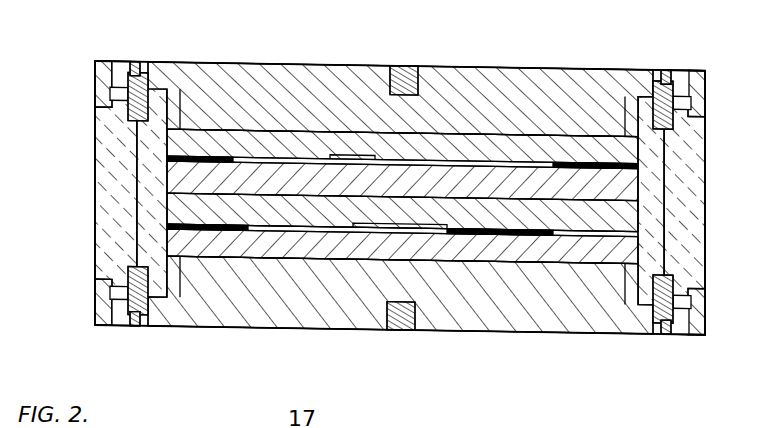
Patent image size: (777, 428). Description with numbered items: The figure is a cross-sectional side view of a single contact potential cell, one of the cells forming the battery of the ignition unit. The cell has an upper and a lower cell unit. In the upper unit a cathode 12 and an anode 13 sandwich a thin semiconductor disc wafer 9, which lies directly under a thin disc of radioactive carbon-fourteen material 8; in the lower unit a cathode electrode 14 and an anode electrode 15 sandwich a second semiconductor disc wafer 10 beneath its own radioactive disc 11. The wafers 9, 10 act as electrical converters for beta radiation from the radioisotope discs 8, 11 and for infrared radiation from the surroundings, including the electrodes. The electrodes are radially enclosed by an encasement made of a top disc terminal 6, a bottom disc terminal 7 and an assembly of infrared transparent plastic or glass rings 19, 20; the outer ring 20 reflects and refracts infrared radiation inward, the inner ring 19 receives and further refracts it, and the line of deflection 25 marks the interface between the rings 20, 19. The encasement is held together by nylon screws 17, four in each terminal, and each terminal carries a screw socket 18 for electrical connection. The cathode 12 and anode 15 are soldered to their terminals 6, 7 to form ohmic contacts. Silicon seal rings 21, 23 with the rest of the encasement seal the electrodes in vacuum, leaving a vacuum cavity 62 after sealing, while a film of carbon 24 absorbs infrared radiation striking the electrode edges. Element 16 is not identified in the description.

The top disc terminal 6 is at (481, 80).
The bottom disc terminal 7 is at (490, 330).
The disc of radioactive material 8 is at (372, 166).
The semiconductor disc wafer 9 is at (490, 166).
The semiconductor disc wafer 10 is at (302, 238).
The disc of radioactive material 11 is at (360, 237).
The cathode 12 is at (522, 150).
The anode 13 is at (560, 192).
The cathode electrode 14 is at (605, 215).
The anode electrode 15 is at (580, 250).
The electrode 16 is at (232, 188).
The nylon screws 17 is at (122, 325).
The screw socket 18 is at (390, 330).
The infrared transparent ring 19 is at (692, 128).
The infrared transparent ring 20 is at (688, 195).
The silicon seal ring 21 is at (118, 87).
The silicon seal ring 23 is at (690, 333).
The film of carbon 24 is at (167, 185).
The line of deflection 25 is at (137, 160).
The vacuum cavity 62 is at (233, 158).